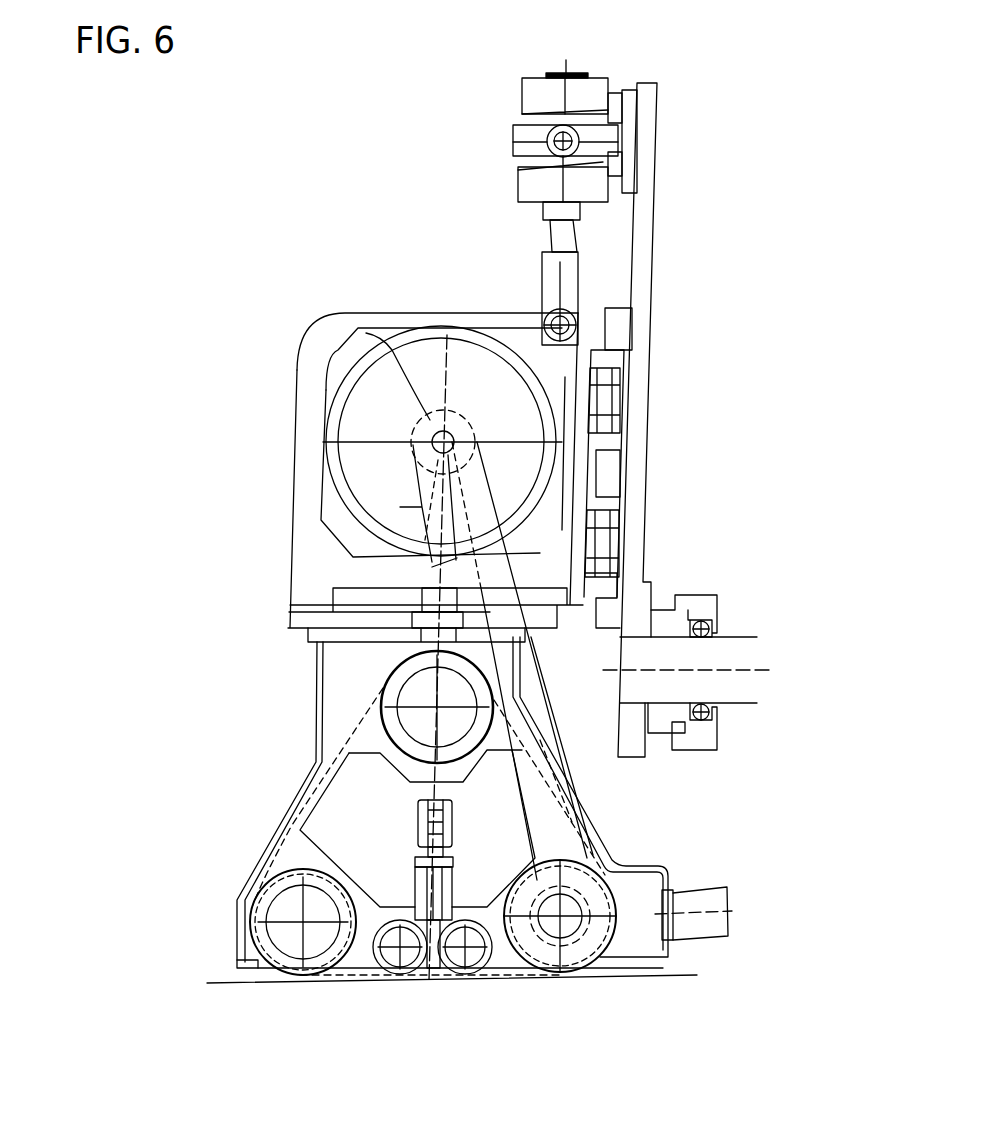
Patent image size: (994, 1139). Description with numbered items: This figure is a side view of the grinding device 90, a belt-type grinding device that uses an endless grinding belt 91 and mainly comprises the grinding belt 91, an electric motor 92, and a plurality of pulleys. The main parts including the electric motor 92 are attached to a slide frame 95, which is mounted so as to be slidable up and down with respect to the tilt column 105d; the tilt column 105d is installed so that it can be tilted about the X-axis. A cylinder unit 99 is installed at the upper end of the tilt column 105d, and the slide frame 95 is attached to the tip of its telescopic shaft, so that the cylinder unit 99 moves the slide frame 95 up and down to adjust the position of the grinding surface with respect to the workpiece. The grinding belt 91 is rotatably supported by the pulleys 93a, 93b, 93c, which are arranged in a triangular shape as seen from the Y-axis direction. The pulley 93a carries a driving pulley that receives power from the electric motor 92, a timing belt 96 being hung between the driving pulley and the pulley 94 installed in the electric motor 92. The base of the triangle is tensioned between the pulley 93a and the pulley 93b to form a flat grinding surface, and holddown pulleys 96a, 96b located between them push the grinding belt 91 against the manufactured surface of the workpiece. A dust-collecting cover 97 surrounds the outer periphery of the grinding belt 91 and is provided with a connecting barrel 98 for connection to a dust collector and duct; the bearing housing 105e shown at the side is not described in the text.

The grinding device 90 is at (768, 329).
The grinding belt 91 is at (280, 852).
The electric motor 92 is at (365, 368).
The pulley 93a is at (630, 968).
The pulley 93b is at (281, 962).
The pulley 93c is at (392, 688).
The pulley 94 is at (395, 345).
The slide frame 95 is at (583, 477).
The timing belt 96 is at (423, 505).
The holddown pulley 96a is at (507, 975).
The holddown pulley 96b is at (386, 957).
The dust-collecting cover 97 is at (287, 808).
The connecting barrel 98 is at (728, 884).
The cylinder unit 99 is at (510, 131).
The tilt column 105d is at (662, 262).
The bearing housing 105e is at (697, 658).